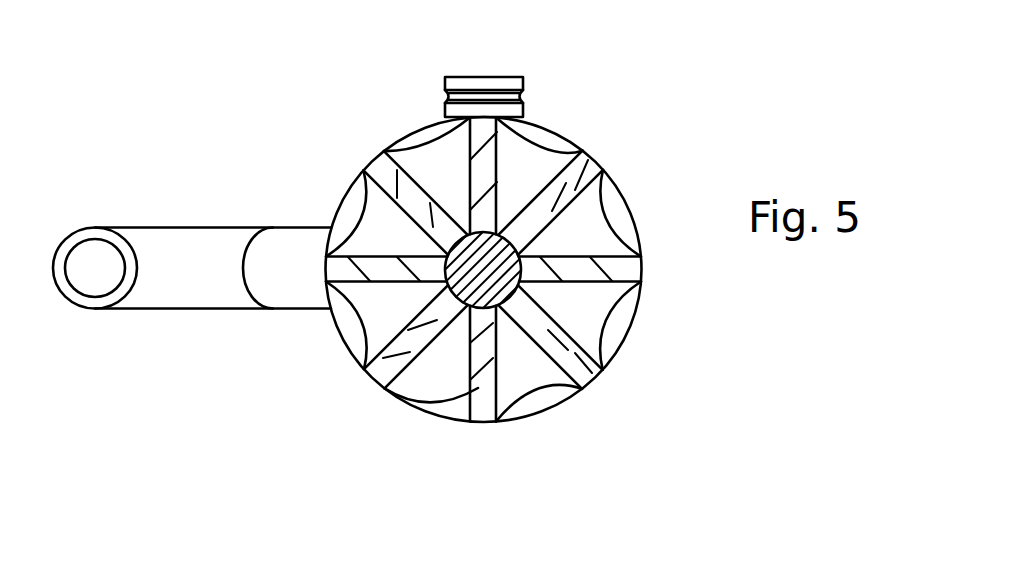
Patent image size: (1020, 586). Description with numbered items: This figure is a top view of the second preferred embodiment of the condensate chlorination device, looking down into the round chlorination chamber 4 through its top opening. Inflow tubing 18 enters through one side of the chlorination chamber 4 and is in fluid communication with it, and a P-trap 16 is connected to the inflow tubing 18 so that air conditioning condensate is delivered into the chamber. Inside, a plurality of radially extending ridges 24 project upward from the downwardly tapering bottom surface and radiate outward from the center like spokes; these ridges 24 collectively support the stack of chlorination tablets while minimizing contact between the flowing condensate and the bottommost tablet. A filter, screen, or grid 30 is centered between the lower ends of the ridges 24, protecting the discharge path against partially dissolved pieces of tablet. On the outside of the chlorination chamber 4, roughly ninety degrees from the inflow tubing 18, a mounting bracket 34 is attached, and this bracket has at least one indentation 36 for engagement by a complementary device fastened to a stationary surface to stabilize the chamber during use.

The chlorination chamber 4 is at (615, 318).
The P-trap 16 is at (203, 292).
The inflow tubing 18 is at (305, 268).
The radially extending ridges 24 is at (398, 345).
The filter, screen, or grid 30 is at (472, 276).
The mounting bracket 34 is at (485, 76).
The indentation 36 is at (522, 92).